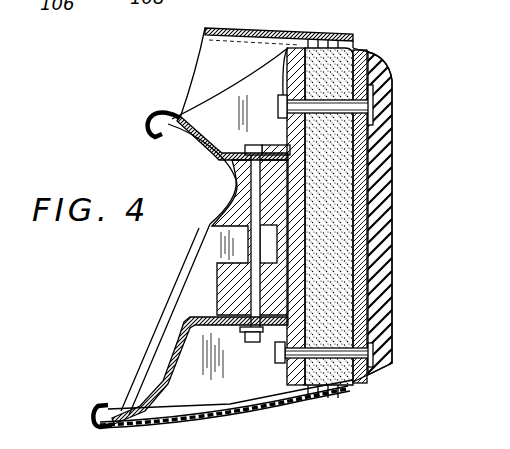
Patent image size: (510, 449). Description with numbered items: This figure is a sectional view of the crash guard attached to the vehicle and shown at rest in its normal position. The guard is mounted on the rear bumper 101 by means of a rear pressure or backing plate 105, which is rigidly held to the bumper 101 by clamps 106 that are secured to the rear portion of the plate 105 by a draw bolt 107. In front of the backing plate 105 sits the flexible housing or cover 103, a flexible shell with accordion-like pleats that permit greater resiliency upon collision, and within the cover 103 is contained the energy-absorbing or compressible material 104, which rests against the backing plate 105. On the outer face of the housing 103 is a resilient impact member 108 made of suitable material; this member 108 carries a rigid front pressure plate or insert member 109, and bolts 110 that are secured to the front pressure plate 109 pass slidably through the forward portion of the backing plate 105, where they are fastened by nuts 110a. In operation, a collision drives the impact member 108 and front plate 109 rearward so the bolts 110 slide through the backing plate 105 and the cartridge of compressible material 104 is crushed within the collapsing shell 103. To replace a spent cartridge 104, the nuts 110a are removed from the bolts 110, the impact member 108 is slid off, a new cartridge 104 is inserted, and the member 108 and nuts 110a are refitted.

The rear bumper 101 is at (156, 332).
The flexible housing or cover 103 is at (261, 21).
The compressible material 104 is at (333, 239).
The rear pressure or backing plate 105 is at (231, 192).
The clamps 106 is at (148, 119).
The draw bolt 107 is at (250, 247).
The resilient impact member 108 is at (382, 77).
The front pressure plate or insert member 109 is at (385, 167).
The bolts 110 is at (320, 107).
The nuts 110a is at (268, 63).